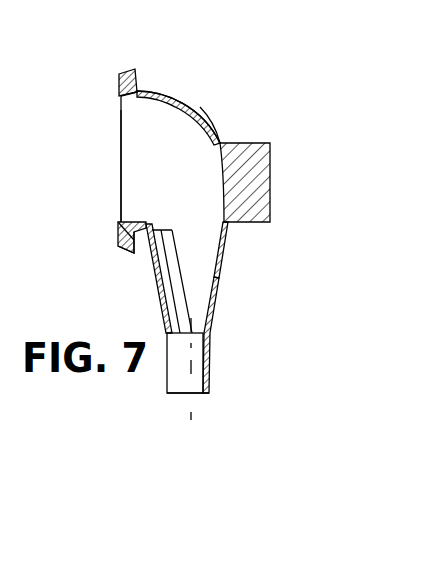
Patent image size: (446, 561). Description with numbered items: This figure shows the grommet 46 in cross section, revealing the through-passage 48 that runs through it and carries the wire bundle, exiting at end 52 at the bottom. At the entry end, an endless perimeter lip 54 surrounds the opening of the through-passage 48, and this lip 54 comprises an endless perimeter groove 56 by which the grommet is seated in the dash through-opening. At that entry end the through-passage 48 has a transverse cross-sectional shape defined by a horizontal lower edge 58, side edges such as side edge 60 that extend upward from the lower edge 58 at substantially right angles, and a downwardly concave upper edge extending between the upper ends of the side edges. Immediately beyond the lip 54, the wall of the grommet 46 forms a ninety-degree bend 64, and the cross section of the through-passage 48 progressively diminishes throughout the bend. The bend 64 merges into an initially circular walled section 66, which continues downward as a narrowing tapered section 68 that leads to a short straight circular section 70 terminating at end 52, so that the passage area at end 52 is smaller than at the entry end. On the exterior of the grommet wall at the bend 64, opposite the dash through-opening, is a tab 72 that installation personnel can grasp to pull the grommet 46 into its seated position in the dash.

The grommet 46 is at (177, 101).
The through-passage 48 is at (206, 122).
The end 52 is at (201, 394).
The endless perimeter lip 54 is at (124, 254).
The endless perimeter groove 56 is at (138, 74).
The horizontal lower edge 58 is at (124, 211).
The side edge 60 is at (120, 168).
The 90° bend 64 is at (128, 118).
The circular walled section 66 is at (229, 242).
The narrowing tapered section 68 is at (223, 277).
The short straight circular section 70 is at (210, 370).
The tab 72 is at (271, 167).